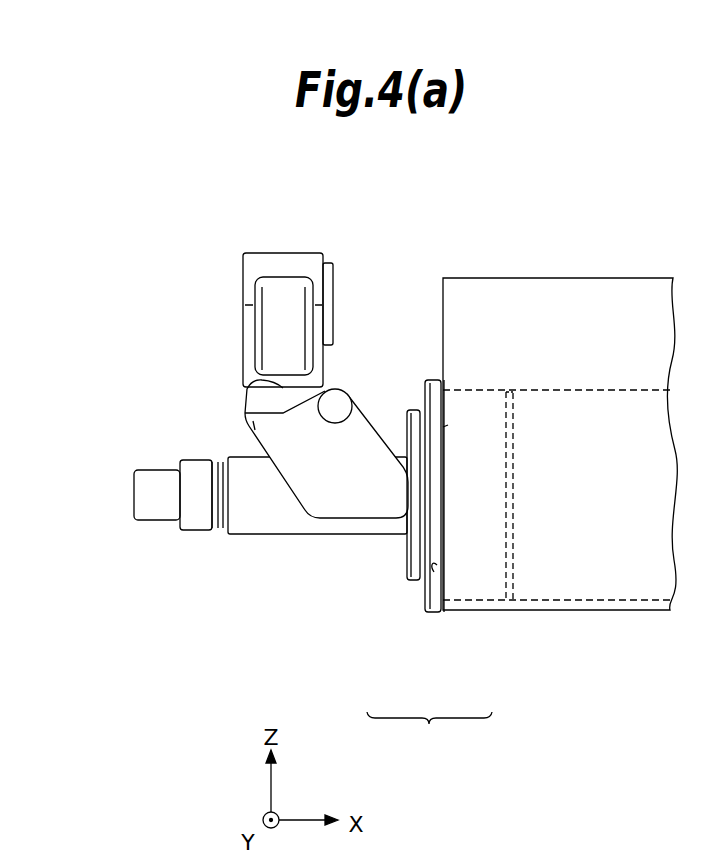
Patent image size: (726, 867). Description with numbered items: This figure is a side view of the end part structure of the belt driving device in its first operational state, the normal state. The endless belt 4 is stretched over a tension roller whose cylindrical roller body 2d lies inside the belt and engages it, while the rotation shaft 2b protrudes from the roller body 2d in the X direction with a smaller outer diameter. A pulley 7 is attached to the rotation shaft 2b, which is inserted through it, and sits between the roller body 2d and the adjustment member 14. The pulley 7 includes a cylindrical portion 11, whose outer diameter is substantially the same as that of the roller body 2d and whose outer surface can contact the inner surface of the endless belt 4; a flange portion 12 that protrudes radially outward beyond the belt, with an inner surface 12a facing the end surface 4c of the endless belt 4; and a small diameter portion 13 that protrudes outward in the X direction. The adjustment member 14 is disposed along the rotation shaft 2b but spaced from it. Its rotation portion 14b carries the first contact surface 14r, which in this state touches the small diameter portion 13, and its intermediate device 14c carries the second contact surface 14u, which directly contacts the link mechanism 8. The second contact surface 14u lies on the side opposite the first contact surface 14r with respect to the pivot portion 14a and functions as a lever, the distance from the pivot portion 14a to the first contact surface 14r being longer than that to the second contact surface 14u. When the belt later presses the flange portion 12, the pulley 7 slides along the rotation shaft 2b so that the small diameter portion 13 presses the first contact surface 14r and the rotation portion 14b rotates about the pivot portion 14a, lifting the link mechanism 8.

The endless belt 4 is at (548, 278).
The end surface 4c is at (437, 565).
The rotation shaft 2b is at (360, 534).
The roller body 2d is at (588, 610).
The pulley 7 is at (429, 734).
The link mechanism 8 is at (243, 292).
The cylindrical portion 11 is at (451, 612).
The flange portion 12 is at (437, 614).
The inner surface 12a is at (445, 427).
The small diameter portion 13 is at (417, 582).
The adjustment member 14 is at (249, 435).
The pivot portion 14a is at (335, 389).
The rotation portion 14b is at (313, 493).
The intermediate device 14c is at (248, 386).
The first contact surface 14r is at (414, 497).
The second contact surface 14u is at (183, 395).